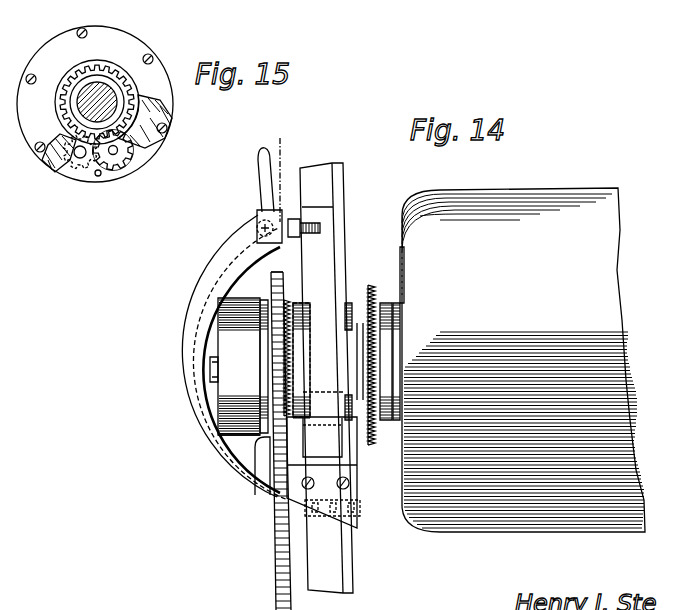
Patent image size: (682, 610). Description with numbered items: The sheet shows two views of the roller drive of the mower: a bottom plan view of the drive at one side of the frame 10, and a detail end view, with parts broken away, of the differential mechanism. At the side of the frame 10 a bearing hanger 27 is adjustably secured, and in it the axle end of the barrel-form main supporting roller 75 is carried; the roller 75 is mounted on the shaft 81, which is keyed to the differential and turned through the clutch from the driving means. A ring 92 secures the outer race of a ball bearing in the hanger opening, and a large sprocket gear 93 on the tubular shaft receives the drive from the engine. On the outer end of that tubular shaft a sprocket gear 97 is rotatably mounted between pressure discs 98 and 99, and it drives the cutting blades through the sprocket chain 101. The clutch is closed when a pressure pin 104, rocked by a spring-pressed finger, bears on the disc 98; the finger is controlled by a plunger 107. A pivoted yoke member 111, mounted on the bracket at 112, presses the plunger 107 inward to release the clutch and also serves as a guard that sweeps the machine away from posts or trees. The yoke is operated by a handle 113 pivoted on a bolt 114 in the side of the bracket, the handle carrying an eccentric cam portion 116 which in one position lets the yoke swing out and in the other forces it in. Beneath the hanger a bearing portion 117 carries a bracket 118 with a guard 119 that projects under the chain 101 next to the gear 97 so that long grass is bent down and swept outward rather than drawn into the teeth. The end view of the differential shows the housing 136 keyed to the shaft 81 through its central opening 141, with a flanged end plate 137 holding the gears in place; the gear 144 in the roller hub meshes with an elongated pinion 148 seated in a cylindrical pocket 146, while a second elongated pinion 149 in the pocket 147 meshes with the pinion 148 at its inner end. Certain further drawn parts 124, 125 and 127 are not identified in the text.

In FIG. 14, the frame 10 is at (325, 197).
In FIG. 14, the bearing hanger 27 is at (340, 248).
In FIG. 14, the main supporting roller 75 is at (480, 216).
In FIG. 15, the shaft 81 is at (93, 97).
In FIG. 14, the ring 92 is at (300, 295).
In FIG. 14, the large sprocket gear 93 is at (371, 284).
In FIG. 14, the sprocket gear 97 is at (278, 272).
In FIG. 14, the pressure disc 98 is at (258, 300).
In FIG. 14, the pressure disc 99 is at (301, 238).
In FIG. 14, the sprocket chain 101 is at (276, 582).
In FIG. 14, the pressure pin 104 is at (250, 436).
In FIG. 14, the plunger 107 is at (210, 366).
In FIG. 14, the yoke member 111 is at (195, 385).
In FIG. 14, the pivot 112 is at (272, 528).
In FIG. 14, the handle 113 is at (268, 190).
In FIG. 14, the bolt 114 is at (290, 218).
In FIG. 14, the eccentric cam portion 116 is at (269, 171).
In FIG. 14, the bearing portion 117 is at (325, 432).
In FIG. 14, the bracket 118 is at (352, 464).
In FIG. 14, the guard 119 is at (300, 513).
In FIG. 14, the rack bar 124 is at (400, 258).
In FIG. 14, the collar 125 is at (398, 304).
In FIG. 14, the collar 127 is at (388, 301).
In FIG. 15, the differential housing 136 is at (56, 165).
In FIG. 15, the flanged end plate 137 is at (155, 68).
In FIG. 15, the central opening 141 is at (138, 130).
In FIG. 15, the gear 144 is at (110, 67).
In FIG. 15, the cylindrical pocket 146 is at (127, 160).
In FIG. 15, the cylindrical pocket 147 is at (97, 178).
In FIG. 15, the elongated pinion 148 is at (116, 166).
In FIG. 15, the elongated pinion 149 is at (78, 172).